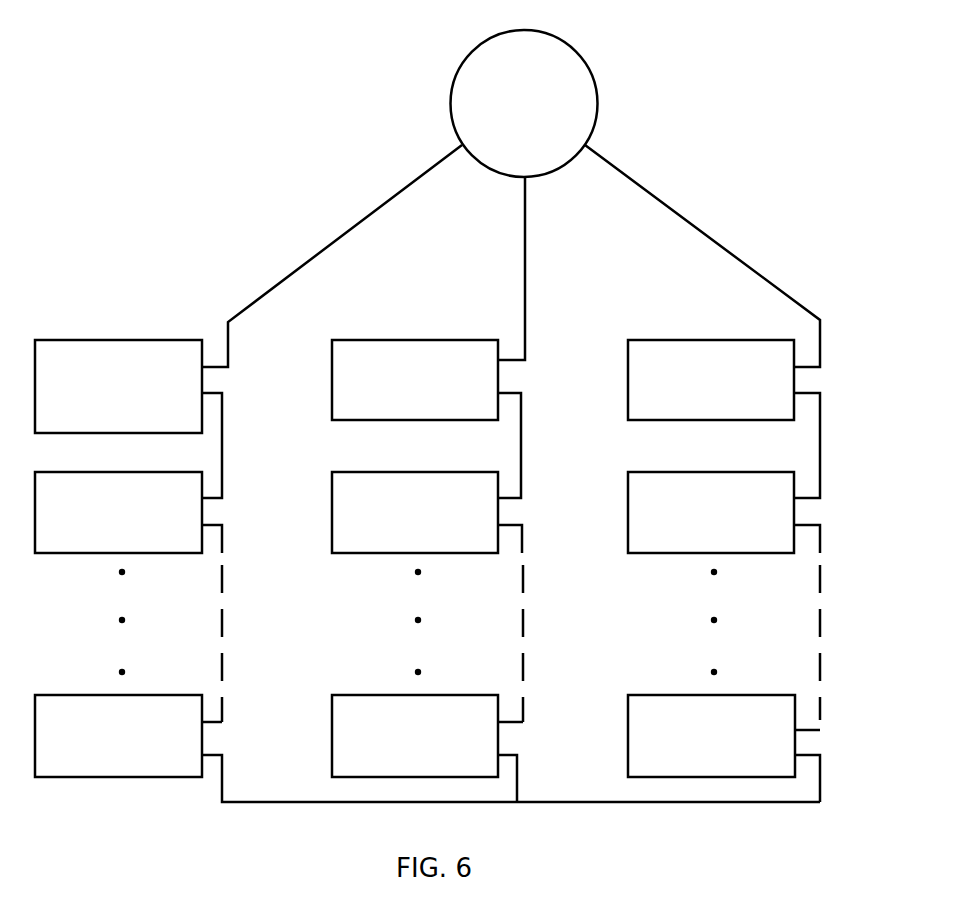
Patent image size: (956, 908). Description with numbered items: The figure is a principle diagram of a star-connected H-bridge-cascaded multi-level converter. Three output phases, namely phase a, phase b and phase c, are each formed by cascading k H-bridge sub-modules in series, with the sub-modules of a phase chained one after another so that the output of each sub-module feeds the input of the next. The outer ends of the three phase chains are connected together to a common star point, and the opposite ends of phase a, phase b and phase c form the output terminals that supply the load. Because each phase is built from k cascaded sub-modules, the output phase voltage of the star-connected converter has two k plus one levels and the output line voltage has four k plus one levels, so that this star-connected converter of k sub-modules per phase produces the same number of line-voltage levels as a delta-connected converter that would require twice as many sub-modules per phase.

The element load is at (524, 103).
The phase a is at (427, 473).
The phase b is at (428, 489).
The phase c is at (710, 473).